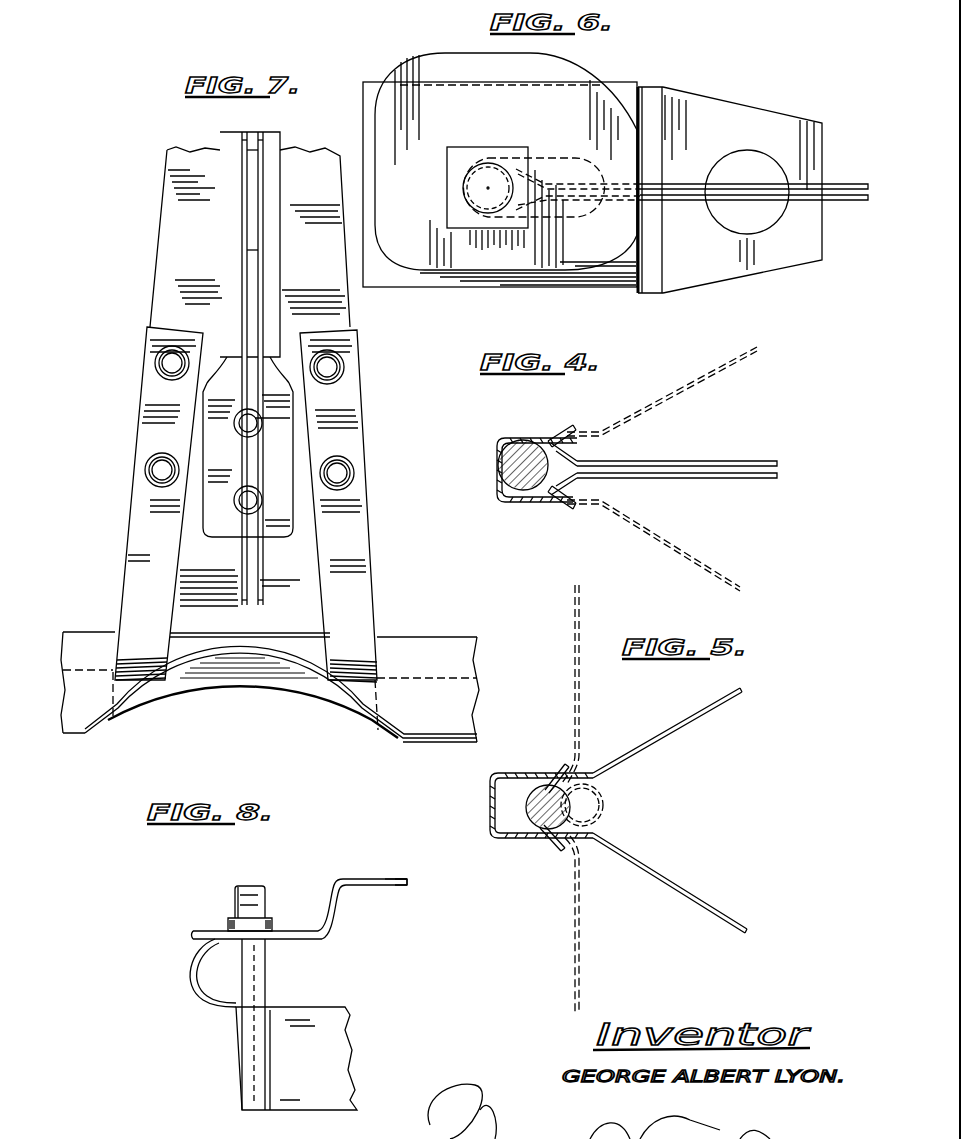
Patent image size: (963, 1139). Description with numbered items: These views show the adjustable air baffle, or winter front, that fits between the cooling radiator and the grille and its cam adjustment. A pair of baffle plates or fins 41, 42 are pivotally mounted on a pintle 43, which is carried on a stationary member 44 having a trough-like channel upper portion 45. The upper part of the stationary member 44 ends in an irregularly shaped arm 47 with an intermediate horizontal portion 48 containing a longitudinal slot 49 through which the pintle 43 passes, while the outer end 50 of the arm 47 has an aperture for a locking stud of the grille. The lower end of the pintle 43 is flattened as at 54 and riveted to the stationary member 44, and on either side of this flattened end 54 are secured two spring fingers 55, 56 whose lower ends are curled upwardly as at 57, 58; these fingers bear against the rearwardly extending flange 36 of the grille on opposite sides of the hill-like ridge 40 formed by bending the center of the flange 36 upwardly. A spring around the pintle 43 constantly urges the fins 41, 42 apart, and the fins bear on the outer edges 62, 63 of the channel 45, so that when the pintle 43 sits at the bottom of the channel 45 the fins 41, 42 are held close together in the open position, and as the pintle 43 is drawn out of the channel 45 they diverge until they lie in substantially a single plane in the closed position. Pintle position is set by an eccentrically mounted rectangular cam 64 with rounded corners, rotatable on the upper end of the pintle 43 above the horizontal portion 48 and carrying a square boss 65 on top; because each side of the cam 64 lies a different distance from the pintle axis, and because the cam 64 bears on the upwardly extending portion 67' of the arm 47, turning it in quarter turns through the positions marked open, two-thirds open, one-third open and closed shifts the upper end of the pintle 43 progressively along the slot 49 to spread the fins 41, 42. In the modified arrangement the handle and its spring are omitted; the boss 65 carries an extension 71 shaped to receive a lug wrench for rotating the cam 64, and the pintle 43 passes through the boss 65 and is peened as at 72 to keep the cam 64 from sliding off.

In FIG. 7, the rearwardly extending flange 36 is at (435, 743).
In FIG. 7, the hill-like ridge 40 is at (245, 660).
In FIG. 7, the baffle plate or fin 41 is at (242, 207).
In FIG. 6, the baffle plate or fin 41 is at (848, 201).
In FIG. 4, the baffle plate or fin 41 is at (700, 480).
In FIG. 5, the baffle plate or fin 41 is at (672, 890).
In FIG. 8, the baffle plate or fin 41 is at (315, 1025).
In FIG. 7, the baffle plate or fin 42 is at (258, 212).
In FIG. 6, the baffle plate or fin 42 is at (860, 185).
In FIG. 4, the baffle plate or fin 42 is at (697, 385).
In FIG. 5, the baffle plate or fin 42 is at (573, 659).
In FIG. 6, the pintle 43 is at (488, 183).
In FIG. 4, the pintle 43 is at (518, 458).
In FIG. 5, the pintle 43 is at (528, 785).
In FIG. 8, the pintle 43 is at (258, 988).
In FIG. 7, the stationary member 44 is at (174, 258).
In FIG. 4, the trough-like or channel upper portion 45 is at (497, 481).
In FIG. 5, the trough-like or channel upper portion 45 is at (488, 812).
In FIG. 8, the irregularly shaped arm 47 is at (348, 900).
In FIG. 8, the intermediate horizontal portion 48 is at (290, 940).
In FIG. 6, the longitudinal slot 49 is at (550, 160).
In FIG. 8, the outer end of arm 50 is at (400, 880).
In FIG. 7, the flattened lower end of pintle 54 is at (222, 522).
In FIG. 7, the spring finger 55 is at (142, 530).
In FIG. 7, the spring finger 56 is at (365, 527).
In FIG. 7, the curled lower end 57 is at (135, 637).
In FIG. 7, the curled lower end 58 is at (360, 655).
In FIG. 4, the outer edge of channel 62 is at (556, 497).
In FIG. 5, the outer edge of channel 62 is at (548, 842).
In FIG. 4, the outer edge of channel 63 is at (557, 440).
In FIG. 5, the outer edge of channel 63 is at (556, 773).
In FIG. 6, the eccentrically mounted rectangular cam 64 is at (420, 105).
In FIG. 8, the eccentrically mounted rectangular cam 64 is at (298, 930).
In FIG. 6, the square boss 65 is at (457, 147).
In FIG. 8, the square boss 65 is at (228, 926).
In FIG. 8, the upwardly extending portion of arm 67' is at (366, 861).
In FIG. 8, the extension of boss 71 is at (235, 898).
In FIG. 8, the peened outer end of pintle 72 is at (256, 890).